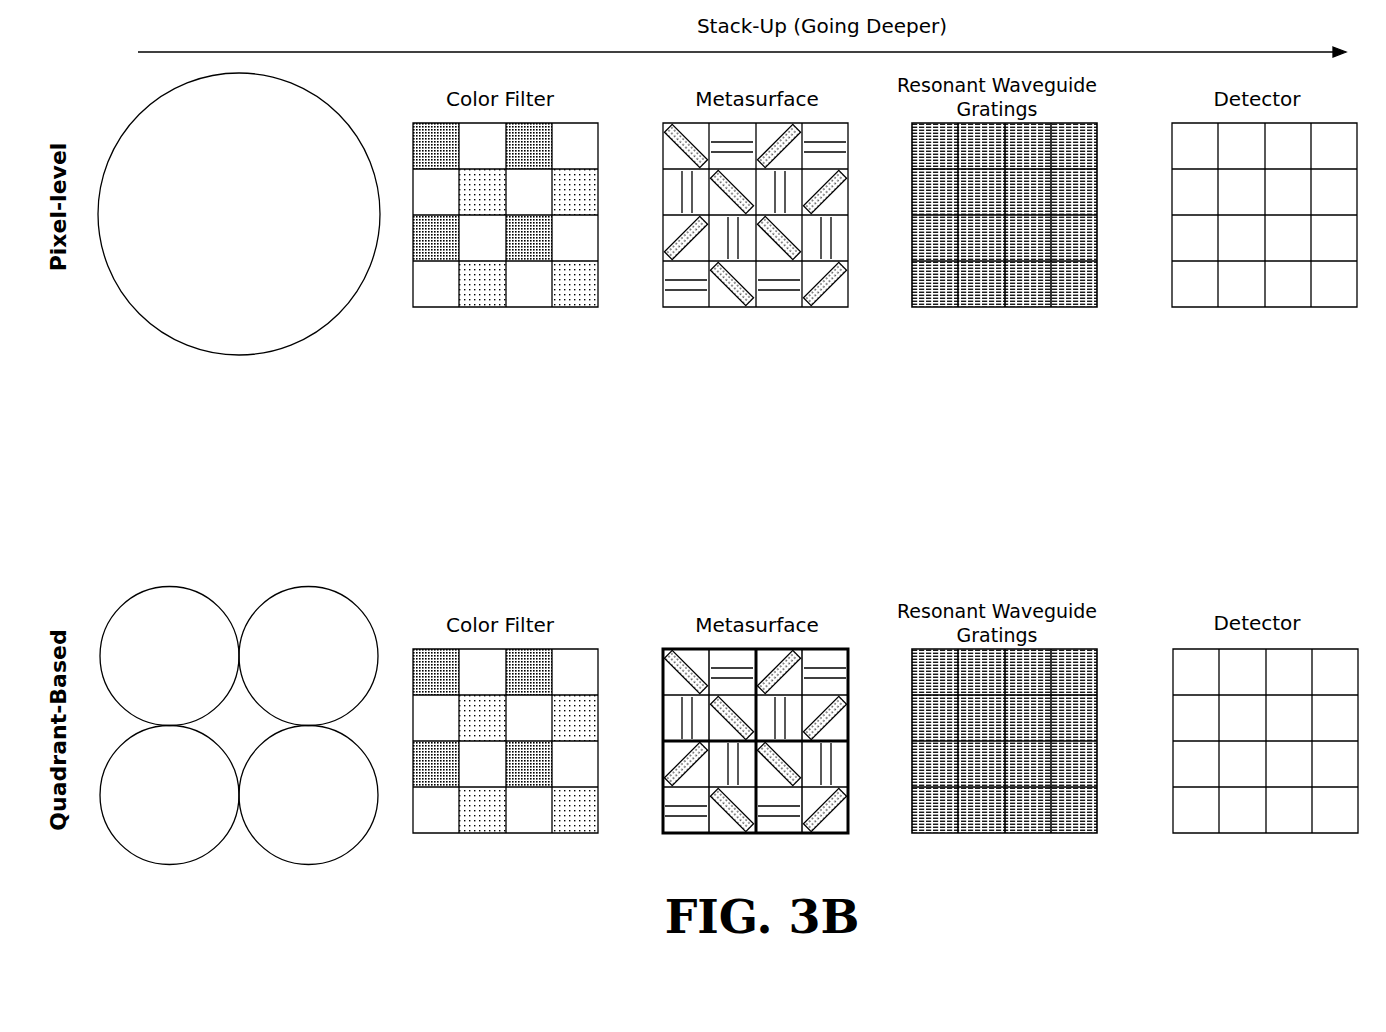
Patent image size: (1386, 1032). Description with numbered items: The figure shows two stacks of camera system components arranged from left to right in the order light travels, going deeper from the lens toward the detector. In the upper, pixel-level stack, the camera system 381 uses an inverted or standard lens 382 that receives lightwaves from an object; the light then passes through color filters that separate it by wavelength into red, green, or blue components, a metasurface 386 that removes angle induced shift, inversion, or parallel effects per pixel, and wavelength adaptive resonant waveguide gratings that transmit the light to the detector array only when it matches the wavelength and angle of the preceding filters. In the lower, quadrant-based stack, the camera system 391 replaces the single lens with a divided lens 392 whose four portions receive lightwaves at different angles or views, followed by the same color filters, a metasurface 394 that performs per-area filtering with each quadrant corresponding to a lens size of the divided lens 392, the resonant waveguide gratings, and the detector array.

The camera system 381 is at (214, 394).
The inverted or standard lens 382 is at (143, 320).
The metasurface 386 is at (780, 308).
The camera system 391 is at (119, 570).
The divided lens 392 is at (200, 592).
The metasurface 394 is at (682, 648).